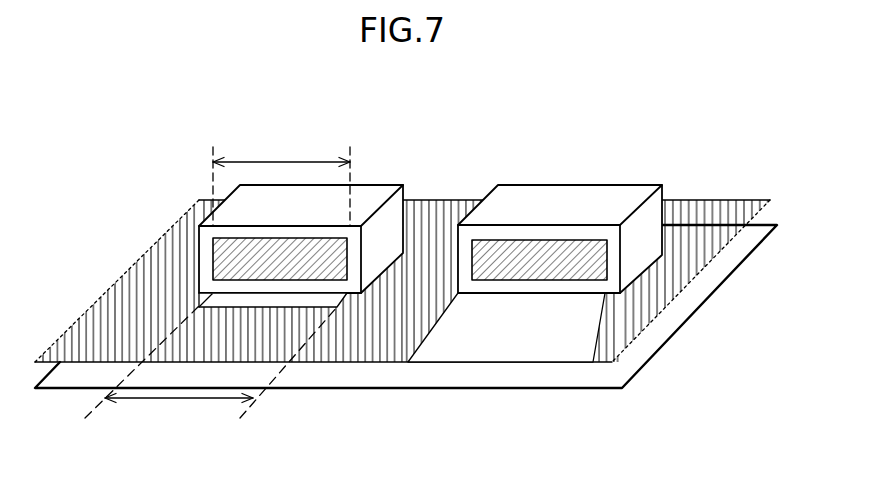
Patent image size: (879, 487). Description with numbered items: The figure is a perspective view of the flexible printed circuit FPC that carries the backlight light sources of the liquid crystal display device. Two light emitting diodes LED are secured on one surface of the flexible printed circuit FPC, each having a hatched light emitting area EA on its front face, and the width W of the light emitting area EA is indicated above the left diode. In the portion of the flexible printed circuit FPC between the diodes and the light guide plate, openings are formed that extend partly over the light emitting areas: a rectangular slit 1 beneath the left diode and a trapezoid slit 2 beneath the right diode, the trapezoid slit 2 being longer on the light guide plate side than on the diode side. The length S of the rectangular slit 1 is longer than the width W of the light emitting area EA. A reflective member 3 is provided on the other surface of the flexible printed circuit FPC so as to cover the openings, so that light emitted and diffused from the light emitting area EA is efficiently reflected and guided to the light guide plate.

The rectangular slit 1 is at (233, 315).
The trapezoid slit 2 is at (533, 335).
The reflective member 3 is at (628, 355).
The light emitting diode LED is at (567, 205).
The light emitting area EA is at (238, 262).
The flexible printed circuit FPC is at (647, 286).
The width of the light emitting area W is at (281, 181).
The length of the slit S is at (211, 366).